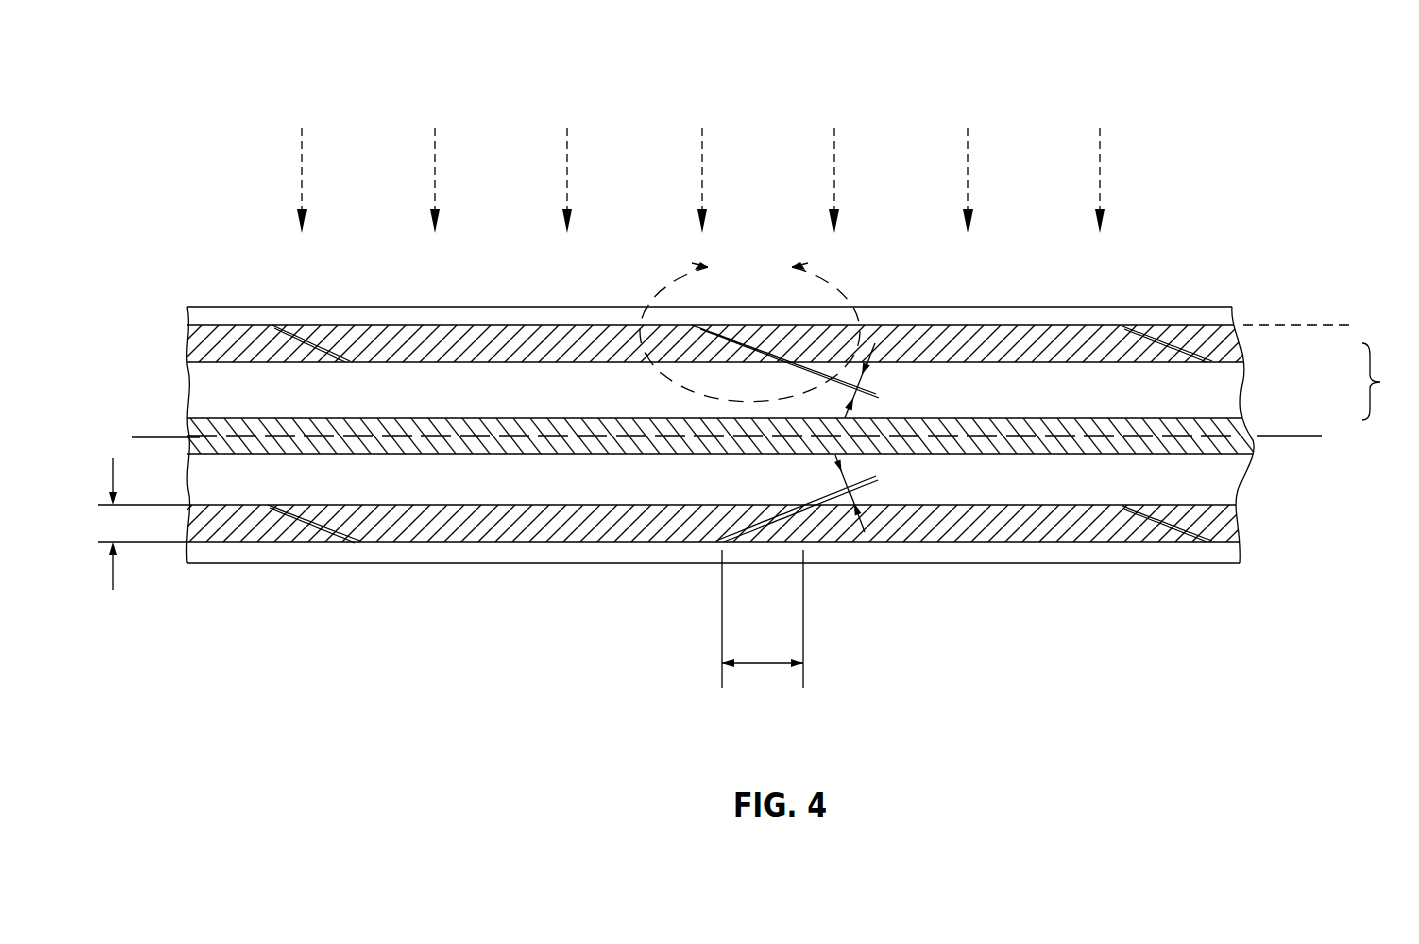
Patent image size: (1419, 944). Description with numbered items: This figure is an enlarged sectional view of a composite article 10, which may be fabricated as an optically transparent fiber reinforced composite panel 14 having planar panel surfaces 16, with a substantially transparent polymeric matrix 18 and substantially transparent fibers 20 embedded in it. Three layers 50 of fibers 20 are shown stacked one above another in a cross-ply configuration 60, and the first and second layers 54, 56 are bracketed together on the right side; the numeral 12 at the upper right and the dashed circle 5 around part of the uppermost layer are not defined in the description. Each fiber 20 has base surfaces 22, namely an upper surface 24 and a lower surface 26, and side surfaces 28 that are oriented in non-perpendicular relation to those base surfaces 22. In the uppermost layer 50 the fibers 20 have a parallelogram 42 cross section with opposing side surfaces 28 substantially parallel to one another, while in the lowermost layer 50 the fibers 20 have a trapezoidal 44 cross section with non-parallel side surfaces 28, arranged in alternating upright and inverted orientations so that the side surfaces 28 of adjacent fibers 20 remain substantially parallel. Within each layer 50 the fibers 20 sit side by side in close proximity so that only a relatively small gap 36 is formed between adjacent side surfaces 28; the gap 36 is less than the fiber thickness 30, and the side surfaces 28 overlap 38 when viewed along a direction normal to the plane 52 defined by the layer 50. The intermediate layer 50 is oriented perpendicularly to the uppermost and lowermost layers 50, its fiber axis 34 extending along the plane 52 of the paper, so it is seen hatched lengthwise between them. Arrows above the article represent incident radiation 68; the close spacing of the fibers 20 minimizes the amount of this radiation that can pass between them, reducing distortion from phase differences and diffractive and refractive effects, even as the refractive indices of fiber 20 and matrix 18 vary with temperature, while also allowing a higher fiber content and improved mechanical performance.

The composite article 10 is at (1213, 307).
The first outer surface 12 is at (1162, 305).
The composite panel 14 is at (1012, 307).
The panel surfaces 16 is at (1083, 305).
The matrix 18 is at (1220, 490).
The fibers 20 is at (948, 342).
The base surfaces 22 is at (337, 322).
The upper surface 24 is at (465, 320).
The lower surface 26 is at (418, 320).
The side surfaces 28 is at (1132, 338).
The fiber thickness 30 is at (113, 590).
The fiber axis 34 is at (173, 437).
The gap 36 is at (885, 398).
The overlap 38 is at (762, 665).
The parallelogram cross section 42 is at (560, 320).
The trapezoidal cross section 44 is at (388, 532).
The layers 50 is at (1225, 523).
The plane 52 is at (1325, 316).
The first layer 54 is at (1237, 348).
The second layer 56 is at (1237, 430).
The cross-ply configuration 60 is at (1389, 381).
The incident radiation 68 is at (301, 148).
The detail region of FIG. 5 is at (750, 325).